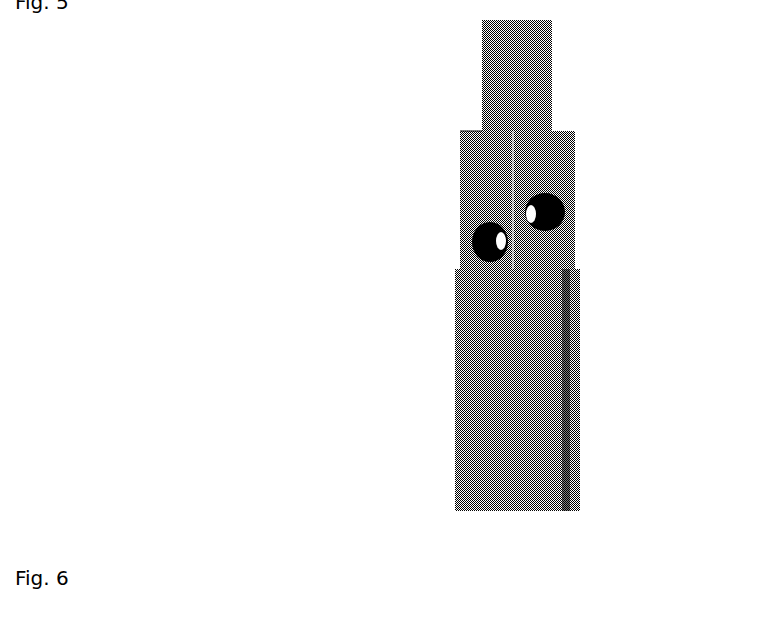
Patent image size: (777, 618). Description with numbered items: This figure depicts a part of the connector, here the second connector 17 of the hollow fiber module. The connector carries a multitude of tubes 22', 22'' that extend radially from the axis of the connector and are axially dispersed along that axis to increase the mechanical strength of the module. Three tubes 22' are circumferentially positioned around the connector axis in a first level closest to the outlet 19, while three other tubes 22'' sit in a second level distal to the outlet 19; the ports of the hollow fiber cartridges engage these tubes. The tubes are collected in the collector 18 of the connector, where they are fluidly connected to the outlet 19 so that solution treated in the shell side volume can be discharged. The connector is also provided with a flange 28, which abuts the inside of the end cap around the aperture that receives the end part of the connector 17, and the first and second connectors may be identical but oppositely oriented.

The second connector 17 is at (545, 403).
The collector 18 is at (565, 150).
The outlet 19 is at (512, 17).
The flange 28 is at (473, 123).
The tubes of first level 22' is at (594, 204).
The tubes of second level 22'' is at (435, 232).